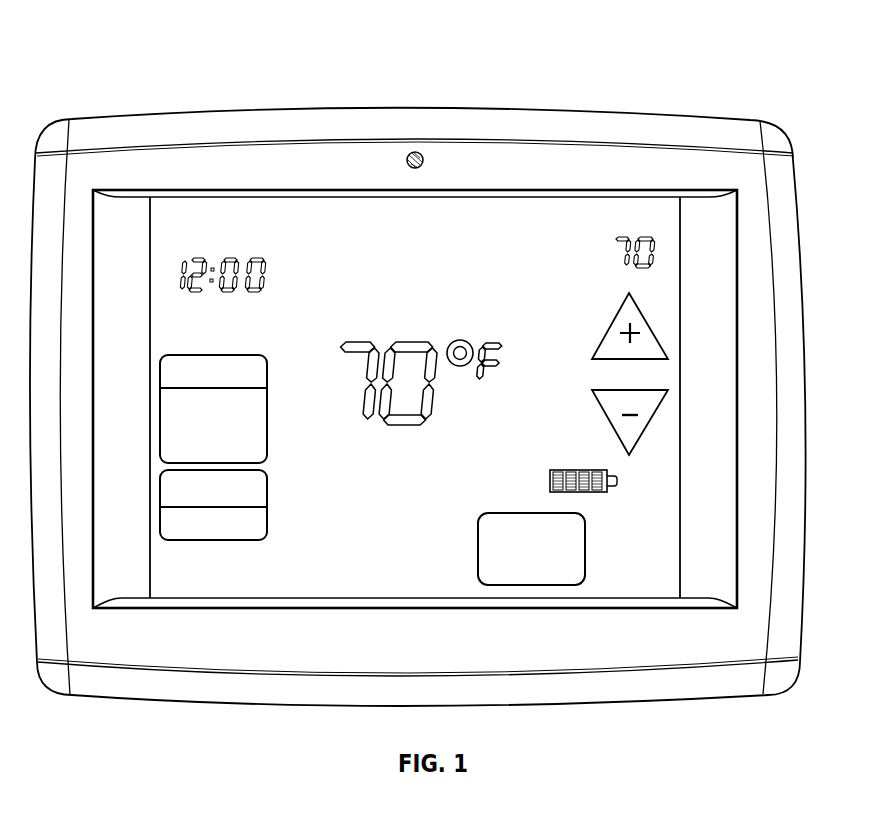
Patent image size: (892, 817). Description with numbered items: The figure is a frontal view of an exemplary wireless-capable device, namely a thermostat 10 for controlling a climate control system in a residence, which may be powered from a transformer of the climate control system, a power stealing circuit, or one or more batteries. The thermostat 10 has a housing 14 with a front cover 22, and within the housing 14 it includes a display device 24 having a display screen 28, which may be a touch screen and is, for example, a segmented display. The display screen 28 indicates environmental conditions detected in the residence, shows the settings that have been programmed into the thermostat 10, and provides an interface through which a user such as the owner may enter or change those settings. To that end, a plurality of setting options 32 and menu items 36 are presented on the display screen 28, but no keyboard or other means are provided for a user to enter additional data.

The thermostat 10 is at (82, 38).
The housing 14 is at (388, 108).
The front cover 22 is at (147, 128).
The display device 24 is at (327, 568).
The display screen 28 is at (388, 510).
The setting options 32 is at (706, 441).
The menu items 36 is at (526, 513).